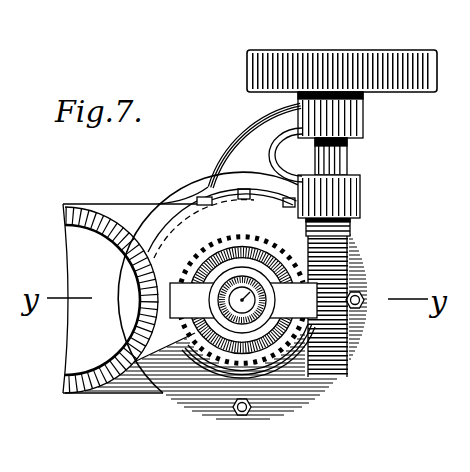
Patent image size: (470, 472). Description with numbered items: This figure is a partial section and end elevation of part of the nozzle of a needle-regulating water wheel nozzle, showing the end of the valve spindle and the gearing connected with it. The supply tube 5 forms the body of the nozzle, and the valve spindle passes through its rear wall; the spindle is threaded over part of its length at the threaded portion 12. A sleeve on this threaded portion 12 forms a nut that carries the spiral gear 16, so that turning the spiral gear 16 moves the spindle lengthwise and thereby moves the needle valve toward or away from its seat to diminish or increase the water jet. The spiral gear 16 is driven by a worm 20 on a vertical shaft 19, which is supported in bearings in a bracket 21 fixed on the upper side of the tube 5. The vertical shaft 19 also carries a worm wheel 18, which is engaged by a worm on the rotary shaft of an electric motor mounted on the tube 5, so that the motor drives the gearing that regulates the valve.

The supply tube 5 is at (130, 298).
The threaded portion of the spindle 12 is at (222, 303).
The spiral gear 16 is at (205, 251).
The worm wheel 18 is at (358, 71).
The vertical shaft 19 is at (347, 153).
The worm 20 is at (350, 231).
The bracket 21 is at (222, 157).